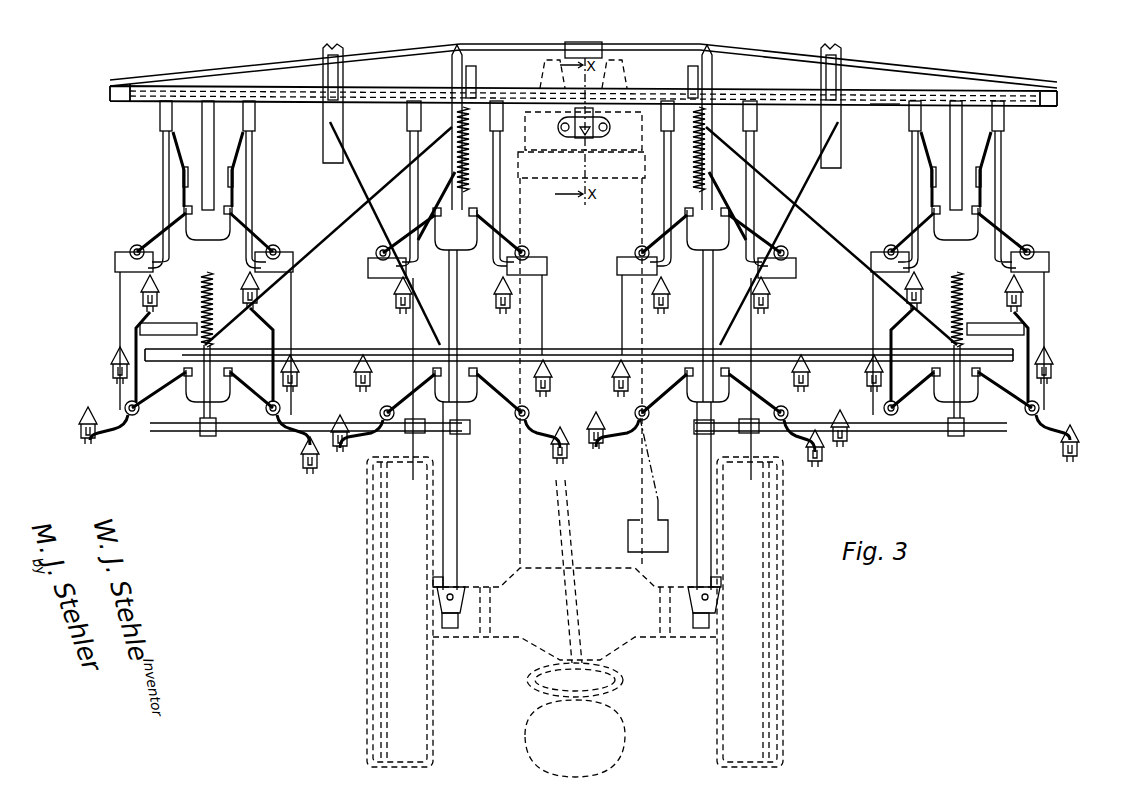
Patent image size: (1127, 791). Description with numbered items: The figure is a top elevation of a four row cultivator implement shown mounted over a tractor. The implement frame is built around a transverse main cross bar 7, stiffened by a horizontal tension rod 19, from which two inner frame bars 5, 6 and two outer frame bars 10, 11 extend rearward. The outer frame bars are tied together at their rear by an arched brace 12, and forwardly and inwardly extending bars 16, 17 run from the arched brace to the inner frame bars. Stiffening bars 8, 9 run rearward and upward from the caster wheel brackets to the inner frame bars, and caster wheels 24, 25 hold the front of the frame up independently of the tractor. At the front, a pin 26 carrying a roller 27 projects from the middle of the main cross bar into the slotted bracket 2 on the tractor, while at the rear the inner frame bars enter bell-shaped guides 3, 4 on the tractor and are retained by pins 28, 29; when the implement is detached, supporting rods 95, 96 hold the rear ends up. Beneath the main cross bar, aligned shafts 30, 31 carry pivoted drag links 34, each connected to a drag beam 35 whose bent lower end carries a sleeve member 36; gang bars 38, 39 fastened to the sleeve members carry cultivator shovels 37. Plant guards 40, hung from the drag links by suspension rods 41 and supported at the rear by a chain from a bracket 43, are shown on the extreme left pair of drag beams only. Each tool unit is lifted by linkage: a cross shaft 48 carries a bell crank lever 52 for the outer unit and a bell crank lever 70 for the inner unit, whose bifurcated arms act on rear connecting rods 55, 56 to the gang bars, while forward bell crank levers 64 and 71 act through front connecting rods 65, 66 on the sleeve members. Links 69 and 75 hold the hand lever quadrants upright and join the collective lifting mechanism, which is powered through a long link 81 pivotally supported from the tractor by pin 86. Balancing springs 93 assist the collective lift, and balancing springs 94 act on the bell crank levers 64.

The bracket 2 is at (558, 127).
The bell-shaped guide 3 is at (437, 598).
The bell-shaped guide 4 is at (690, 601).
The inner frame bar 5 is at (458, 516).
The inner frame bar 6 is at (697, 506).
The main cross bar 7 is at (1022, 108).
The stiffening bar 8 is at (354, 168).
The stiffening bar 9 is at (814, 167).
The outer frame bar 10 is at (214, 148).
The outer frame bar 11 is at (963, 166).
The arched brace 12 is at (586, 348).
The forwardly and inwardly extending bar 16 is at (351, 217).
The forwardly and inwardly extending bar 17 is at (812, 219).
The tension rod 19 is at (234, 69).
The caster wheel 24 is at (333, 163).
The caster wheel 25 is at (843, 165).
The pin 26 is at (585, 138).
The roller 27 is at (606, 128).
The pin 28 is at (455, 593).
The pin 29 is at (710, 598).
The shaft 30 is at (405, 113).
The shaft 31 is at (884, 107).
The drag link 34 is at (160, 120).
The drag beam 35 is at (162, 181).
The sleeve member 36 is at (128, 252).
The cultivator shovel 37 is at (148, 291).
The gang bar 38 is at (140, 381).
The gang bar 39 is at (118, 384).
The plant guard 40 is at (188, 184).
The suspension rod 41 is at (179, 150).
The bracket 43 is at (170, 325).
The cross shaft 48 is at (170, 432).
The bell crank lever 52 is at (218, 400).
The rear connecting rod 55 is at (162, 394).
The rear connecting rod 56 is at (250, 395).
The bell crank lever 64 is at (212, 238).
The front connecting rod 65 is at (158, 237).
The front connecting rod 66 is at (273, 244).
The link 69 is at (440, 200).
The bell crank lever 70 is at (472, 401).
The bell crank lever 71 is at (473, 241).
The link 75 is at (451, 122).
The link 81 is at (652, 467).
The pin 86 is at (660, 552).
The balancing spring 93 is at (468, 160).
The balancing spring 94 is at (212, 303).
The supporting rod 95 is at (430, 501).
The supporting rod 96 is at (730, 516).